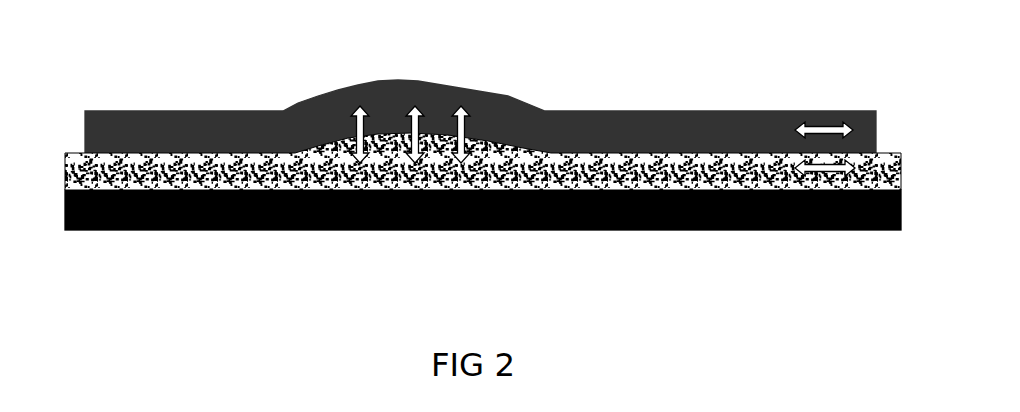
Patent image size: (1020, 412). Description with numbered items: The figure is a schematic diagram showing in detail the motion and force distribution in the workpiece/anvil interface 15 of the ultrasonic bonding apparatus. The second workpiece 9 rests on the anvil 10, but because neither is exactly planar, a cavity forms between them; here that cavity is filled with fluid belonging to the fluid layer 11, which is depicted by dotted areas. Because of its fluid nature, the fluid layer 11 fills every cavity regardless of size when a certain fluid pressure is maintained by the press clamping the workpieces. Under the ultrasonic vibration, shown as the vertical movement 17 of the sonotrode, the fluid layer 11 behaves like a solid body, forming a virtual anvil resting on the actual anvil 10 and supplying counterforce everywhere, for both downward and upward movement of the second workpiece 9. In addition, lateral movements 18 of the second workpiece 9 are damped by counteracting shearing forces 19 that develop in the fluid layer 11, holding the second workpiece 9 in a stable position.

The second workpiece 9 is at (214, 106).
The anvil 10 is at (213, 221).
The fluid layer 11 is at (882, 152).
The workpiece/anvil interface 15 is at (711, 76).
The vertical movement 17 is at (458, 102).
The lateral movements 18 is at (812, 122).
The shearing forces 19 is at (825, 160).